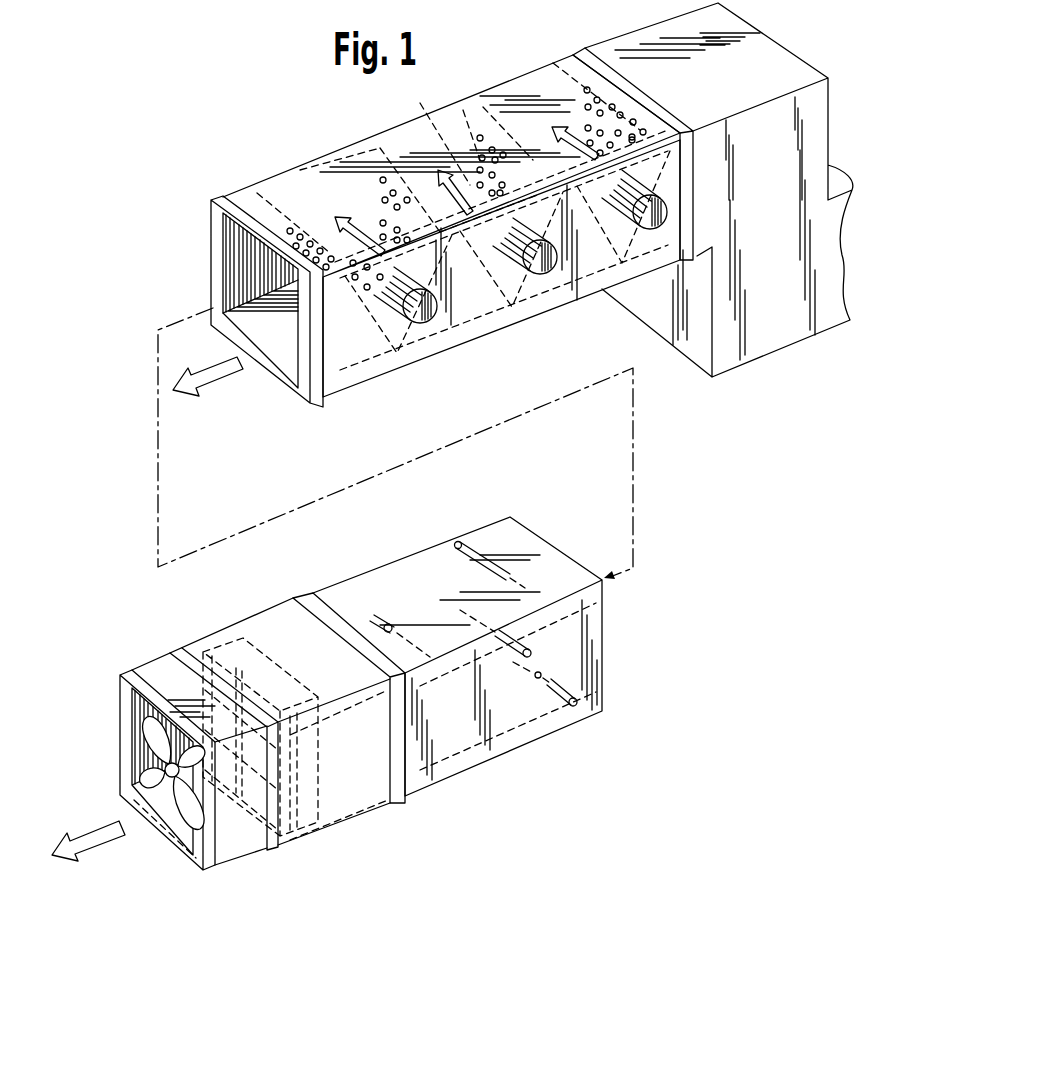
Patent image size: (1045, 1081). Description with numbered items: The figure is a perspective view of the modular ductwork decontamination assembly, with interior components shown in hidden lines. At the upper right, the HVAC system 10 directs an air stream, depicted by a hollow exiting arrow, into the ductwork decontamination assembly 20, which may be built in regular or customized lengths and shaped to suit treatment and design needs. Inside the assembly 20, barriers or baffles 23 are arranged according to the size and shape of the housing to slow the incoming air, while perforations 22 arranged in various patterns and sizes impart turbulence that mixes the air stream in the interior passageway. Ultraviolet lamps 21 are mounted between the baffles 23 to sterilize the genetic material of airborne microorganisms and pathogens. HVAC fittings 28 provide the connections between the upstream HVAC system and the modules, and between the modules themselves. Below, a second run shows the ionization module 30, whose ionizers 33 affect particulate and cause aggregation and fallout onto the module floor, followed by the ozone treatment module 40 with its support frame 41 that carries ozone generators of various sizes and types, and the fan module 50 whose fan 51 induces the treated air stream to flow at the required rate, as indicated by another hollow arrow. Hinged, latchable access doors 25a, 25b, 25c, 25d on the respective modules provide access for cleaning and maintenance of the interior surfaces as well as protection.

The HVAC system 10 is at (767, 378).
The ductwork decontamination assembly 20 is at (482, 283).
The ultraviolet lamp 21 is at (556, 262).
The perforations 22 is at (367, 157).
The barriers/baffles 23 is at (440, 140).
The access door 25a is at (352, 358).
The access door 25b is at (457, 770).
The access door 25c is at (357, 800).
The access door 25d is at (212, 872).
The HVAC fittings 28 is at (218, 200).
The ionization module 30 is at (592, 648).
The ionizers 33 is at (460, 545).
The ozone treatment module 40 is at (233, 656).
The ozone treatment module support frame 41 is at (295, 845).
The fan module 50 is at (243, 855).
The fan 51 is at (147, 783).